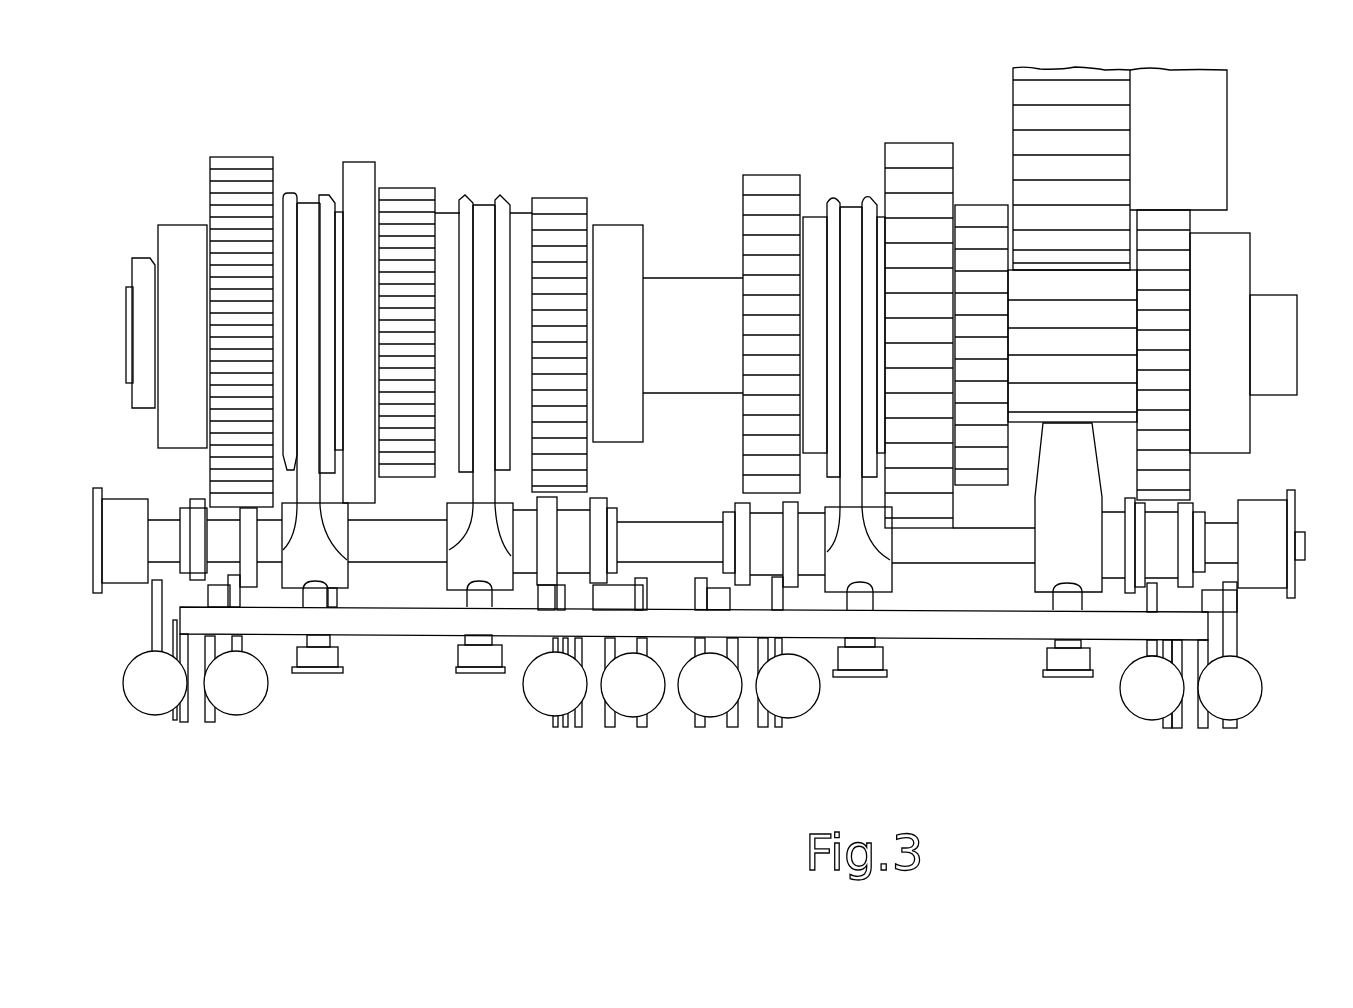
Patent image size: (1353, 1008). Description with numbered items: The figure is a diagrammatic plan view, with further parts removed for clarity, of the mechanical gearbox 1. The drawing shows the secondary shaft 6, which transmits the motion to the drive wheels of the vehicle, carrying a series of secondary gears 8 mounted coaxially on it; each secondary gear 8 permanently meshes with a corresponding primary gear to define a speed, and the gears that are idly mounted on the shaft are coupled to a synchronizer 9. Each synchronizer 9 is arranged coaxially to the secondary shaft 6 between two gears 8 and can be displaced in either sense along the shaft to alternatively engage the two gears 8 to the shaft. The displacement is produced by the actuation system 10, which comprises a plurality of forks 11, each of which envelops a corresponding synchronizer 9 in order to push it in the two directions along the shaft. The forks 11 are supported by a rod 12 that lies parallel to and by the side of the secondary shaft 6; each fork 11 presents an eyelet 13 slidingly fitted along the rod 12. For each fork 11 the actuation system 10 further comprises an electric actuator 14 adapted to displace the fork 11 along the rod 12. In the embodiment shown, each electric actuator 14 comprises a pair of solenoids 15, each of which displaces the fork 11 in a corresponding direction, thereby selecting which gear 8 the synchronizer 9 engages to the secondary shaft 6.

The mechanical gearbox 1 is at (388, 788).
The secondary shaft 6 is at (1287, 338).
The secondary gear 8 is at (245, 165).
The synchronizer 9 is at (289, 194).
The actuation system 10 is at (653, 753).
The fork 11 is at (337, 582).
The rod 12 is at (969, 555).
The eyelet 13 is at (360, 538).
The electric actuator 14 is at (197, 758).
The solenoid 15 is at (143, 705).